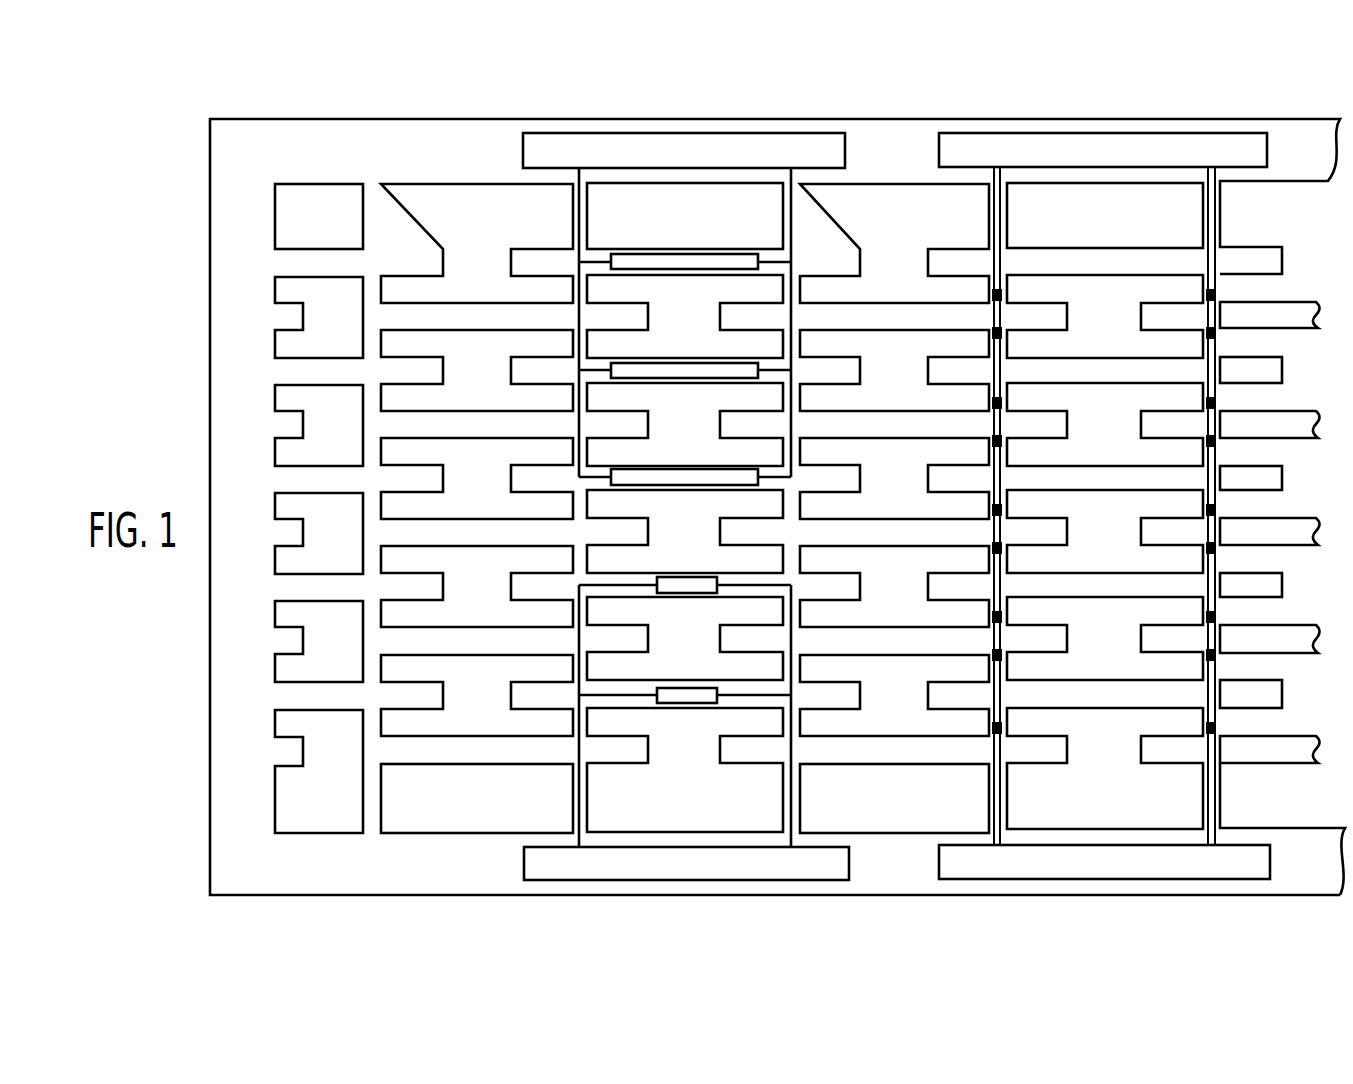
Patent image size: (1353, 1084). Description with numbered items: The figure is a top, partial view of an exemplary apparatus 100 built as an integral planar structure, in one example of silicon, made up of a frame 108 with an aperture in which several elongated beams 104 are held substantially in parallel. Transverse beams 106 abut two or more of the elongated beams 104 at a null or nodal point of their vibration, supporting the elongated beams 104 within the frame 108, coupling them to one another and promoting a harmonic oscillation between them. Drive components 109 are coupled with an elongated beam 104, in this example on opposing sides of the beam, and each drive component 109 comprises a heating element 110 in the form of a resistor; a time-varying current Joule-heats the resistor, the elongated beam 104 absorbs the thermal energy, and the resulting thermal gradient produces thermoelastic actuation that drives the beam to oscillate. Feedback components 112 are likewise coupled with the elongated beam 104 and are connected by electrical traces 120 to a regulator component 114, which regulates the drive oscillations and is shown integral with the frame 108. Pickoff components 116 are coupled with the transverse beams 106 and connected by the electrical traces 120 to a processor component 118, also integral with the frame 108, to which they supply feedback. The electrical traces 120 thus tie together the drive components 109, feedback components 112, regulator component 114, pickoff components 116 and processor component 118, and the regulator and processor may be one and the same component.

The apparatus 100 is at (178, 694).
The elongated beam 104 is at (625, 250).
The transverse beam 106 is at (802, 215).
The frame 108 is at (270, 119).
The drive component 109 is at (663, 270).
The heating element 110 is at (684, 262).
The feedback component 112 is at (684, 578).
The regulator component 114 is at (613, 147).
The pickoff component 116 is at (1003, 294).
The processor component 118 is at (1053, 147).
The electrical trace 120 is at (1200, 261).